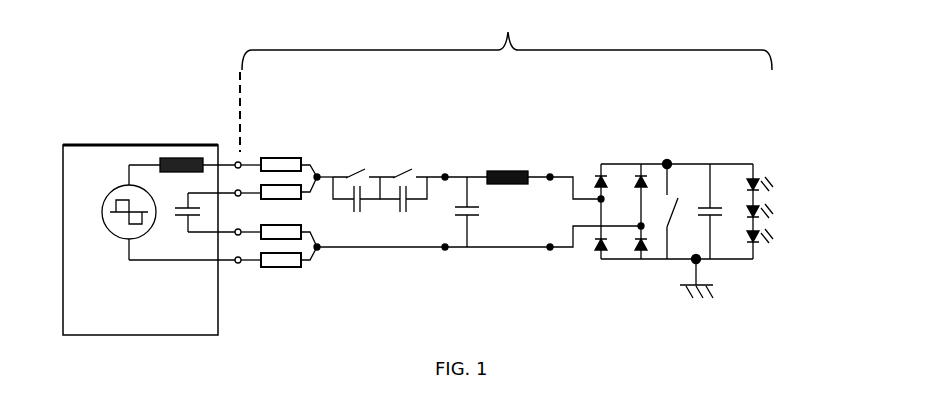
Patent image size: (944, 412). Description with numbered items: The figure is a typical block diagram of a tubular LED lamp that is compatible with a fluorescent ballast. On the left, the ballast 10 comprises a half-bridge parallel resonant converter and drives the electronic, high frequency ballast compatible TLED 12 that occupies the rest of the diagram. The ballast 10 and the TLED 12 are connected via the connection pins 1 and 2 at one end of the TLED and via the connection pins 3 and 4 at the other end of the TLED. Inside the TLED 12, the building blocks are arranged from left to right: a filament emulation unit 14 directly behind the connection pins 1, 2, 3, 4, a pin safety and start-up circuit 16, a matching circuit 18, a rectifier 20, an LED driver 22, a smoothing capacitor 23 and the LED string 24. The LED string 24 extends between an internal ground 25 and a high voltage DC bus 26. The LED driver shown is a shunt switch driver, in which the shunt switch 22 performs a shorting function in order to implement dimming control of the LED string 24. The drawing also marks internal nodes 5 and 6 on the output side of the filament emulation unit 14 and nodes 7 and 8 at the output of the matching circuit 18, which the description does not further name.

The connection pin 1 is at (237, 162).
The connection pin 2 is at (236, 190).
The connection pin 3 is at (240, 235).
The connection pin 4 is at (238, 263).
The first node 5 is at (317, 175).
The second node 6 is at (318, 251).
The first output node 7 is at (550, 175).
The second output node 8 is at (551, 250).
The ballast 10 is at (130, 145).
The TLED 12 is at (506, 79).
The filament emulation unit 14 is at (267, 142).
The pin safety and start-up circuit 16 is at (368, 152).
The matching circuit 18 is at (498, 160).
The rectifier 20 is at (608, 150).
The LED driver 22 is at (672, 150).
The smoothing capacitor 23 is at (712, 150).
The LED string 24 is at (762, 155).
The internal ground 25 is at (698, 261).
The high voltage DC bus 26 is at (666, 162).